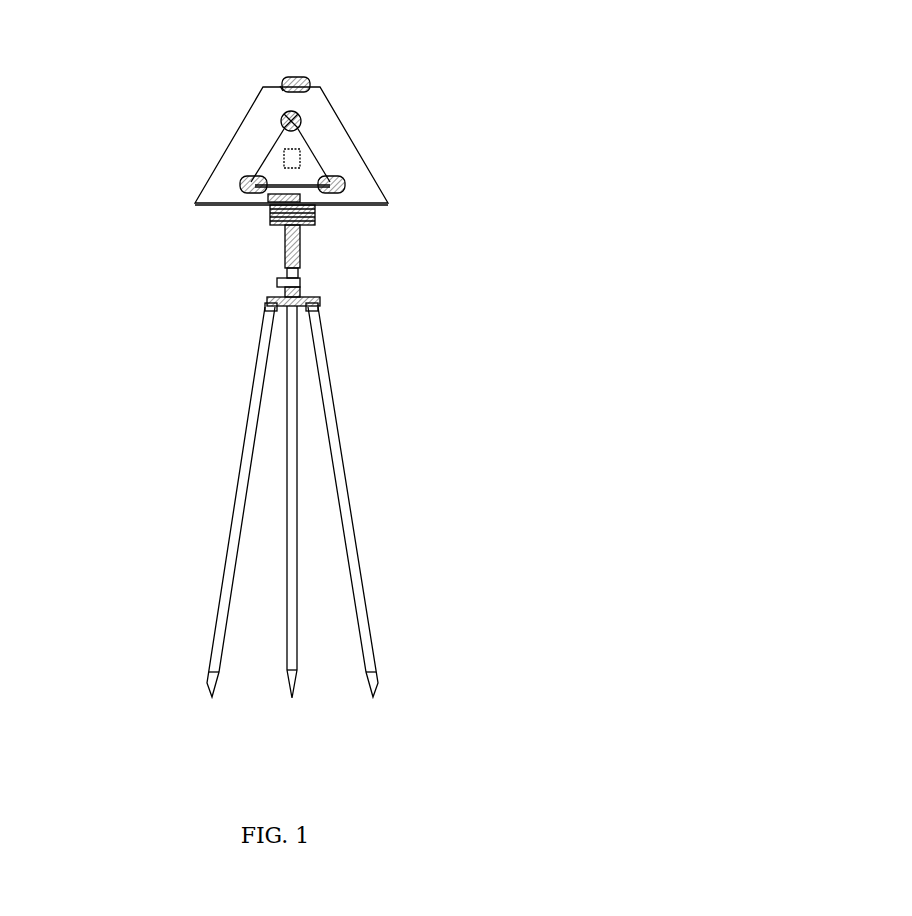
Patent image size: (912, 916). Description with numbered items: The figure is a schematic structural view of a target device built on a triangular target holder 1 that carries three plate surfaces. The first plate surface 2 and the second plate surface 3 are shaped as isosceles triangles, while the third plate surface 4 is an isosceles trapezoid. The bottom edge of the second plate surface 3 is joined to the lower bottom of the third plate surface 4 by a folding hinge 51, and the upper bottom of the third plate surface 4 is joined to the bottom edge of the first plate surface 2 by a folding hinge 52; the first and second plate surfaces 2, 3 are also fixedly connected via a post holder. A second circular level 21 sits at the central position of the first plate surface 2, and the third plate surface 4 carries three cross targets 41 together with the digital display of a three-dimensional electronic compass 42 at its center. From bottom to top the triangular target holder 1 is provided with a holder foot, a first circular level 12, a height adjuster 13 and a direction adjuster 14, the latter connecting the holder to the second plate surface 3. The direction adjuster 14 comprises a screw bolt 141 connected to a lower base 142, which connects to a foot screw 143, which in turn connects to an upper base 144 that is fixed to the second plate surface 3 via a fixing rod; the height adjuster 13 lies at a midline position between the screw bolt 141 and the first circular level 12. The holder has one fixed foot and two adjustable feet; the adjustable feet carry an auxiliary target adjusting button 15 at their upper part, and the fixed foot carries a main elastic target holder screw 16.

The triangular target holder 1 is at (520, 205).
The first circular level 12 is at (271, 285).
The height adjuster 13 is at (308, 252).
The direction adjuster 14 is at (57, 202).
The screw bolt 141 is at (276, 204).
The lower base 142 is at (266, 226).
The foot screw 143 is at (326, 219).
The upper base 144 is at (324, 205).
The auxiliary target adjusting button 15 is at (326, 297).
The main elastic target holder screw 16 is at (281, 301).
The first plate surface 2 is at (292, 76).
The second circular level 21 is at (302, 78).
The second plate surface 3 is at (362, 200).
The third plate surface 4 is at (342, 140).
The cross target 41 is at (284, 117).
The three-dimensional electronic compass 42 is at (283, 165).
The folding hinge 51 is at (274, 196).
The folding hinge 52 is at (278, 87).